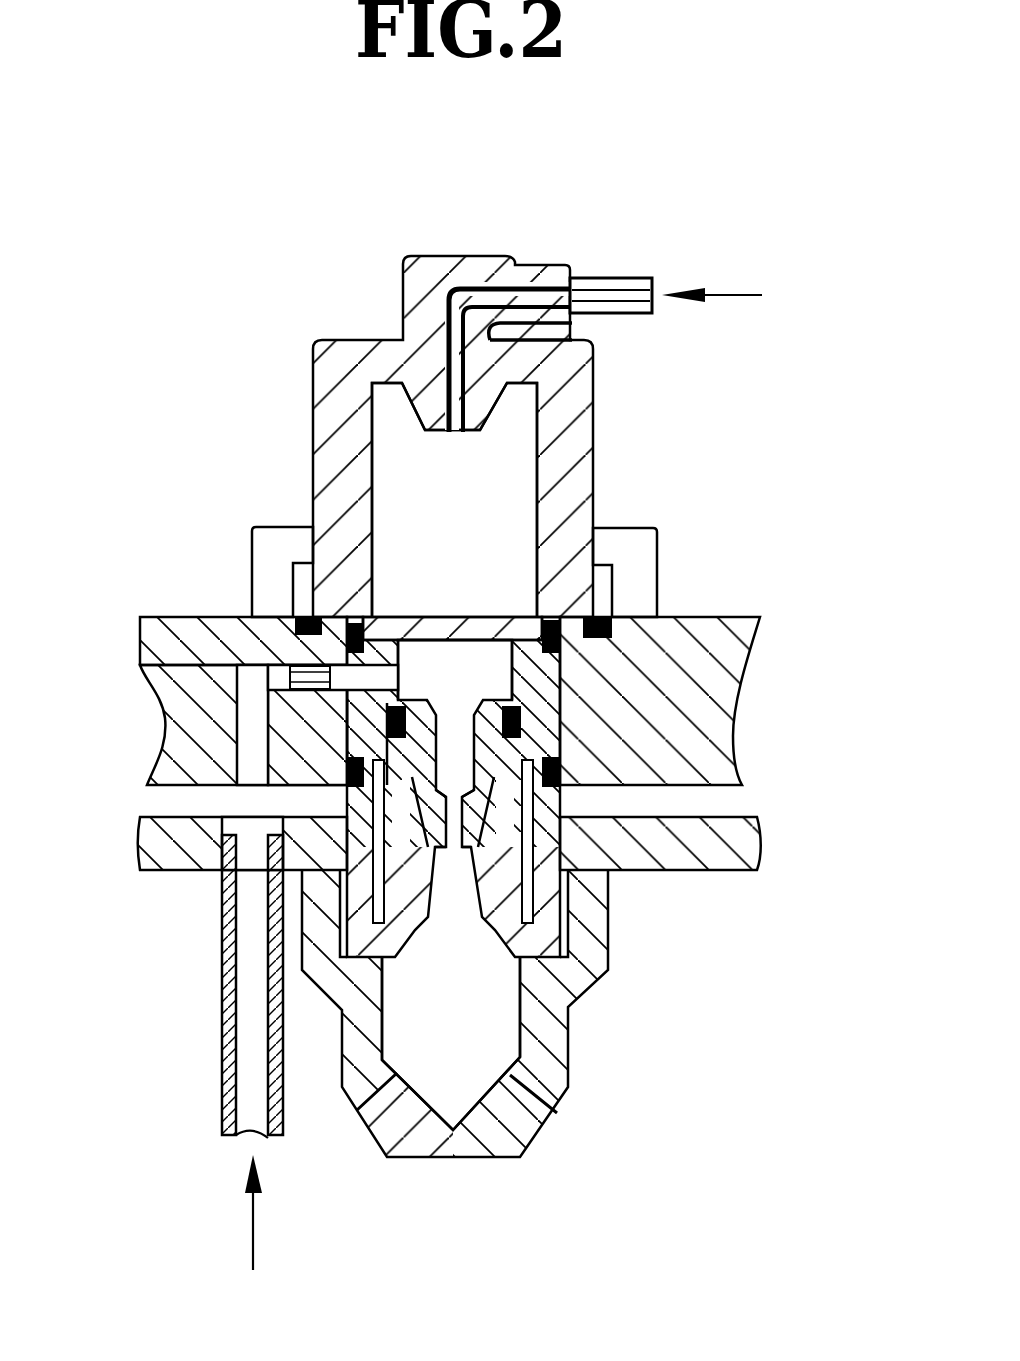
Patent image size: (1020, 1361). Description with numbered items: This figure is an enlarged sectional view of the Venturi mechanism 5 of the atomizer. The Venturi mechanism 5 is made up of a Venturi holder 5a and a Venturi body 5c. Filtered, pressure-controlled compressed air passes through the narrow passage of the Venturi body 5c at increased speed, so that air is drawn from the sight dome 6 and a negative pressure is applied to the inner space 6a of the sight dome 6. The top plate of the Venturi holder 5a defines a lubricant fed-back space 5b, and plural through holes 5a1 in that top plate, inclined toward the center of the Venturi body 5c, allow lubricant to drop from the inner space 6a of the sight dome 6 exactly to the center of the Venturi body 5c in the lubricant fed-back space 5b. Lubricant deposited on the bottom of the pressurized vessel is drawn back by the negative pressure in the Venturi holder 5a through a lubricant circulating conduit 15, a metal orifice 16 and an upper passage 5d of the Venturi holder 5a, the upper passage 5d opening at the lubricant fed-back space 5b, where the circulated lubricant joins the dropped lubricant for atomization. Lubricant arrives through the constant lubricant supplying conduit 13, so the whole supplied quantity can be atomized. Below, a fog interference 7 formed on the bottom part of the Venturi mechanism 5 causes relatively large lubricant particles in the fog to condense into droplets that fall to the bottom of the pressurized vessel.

The Venturi mechanism 5 is at (510, 903).
The Venturi holder 5a is at (562, 700).
The through holes 5a1 is at (420, 640).
The lubricant fed-back space 5b is at (462, 672).
The Venturi body 5c is at (478, 832).
The upper passage 5d is at (290, 618).
The sight dome 6 is at (613, 458).
The inner space 6a is at (405, 472).
The fog interference 7 is at (463, 1087).
The constant lubricant supplying conduit 13 is at (628, 277).
The lubricant circulating conduit 15 is at (222, 1005).
The metal orifice 16 is at (290, 677).